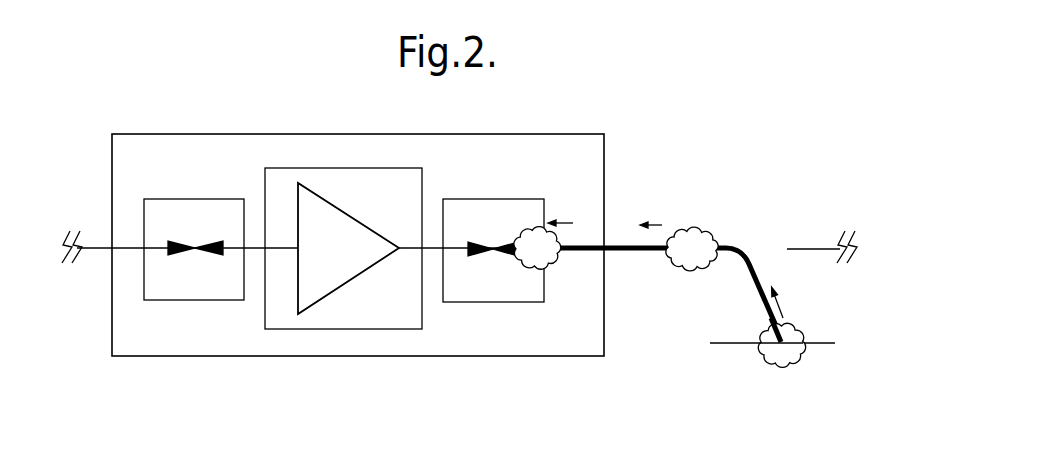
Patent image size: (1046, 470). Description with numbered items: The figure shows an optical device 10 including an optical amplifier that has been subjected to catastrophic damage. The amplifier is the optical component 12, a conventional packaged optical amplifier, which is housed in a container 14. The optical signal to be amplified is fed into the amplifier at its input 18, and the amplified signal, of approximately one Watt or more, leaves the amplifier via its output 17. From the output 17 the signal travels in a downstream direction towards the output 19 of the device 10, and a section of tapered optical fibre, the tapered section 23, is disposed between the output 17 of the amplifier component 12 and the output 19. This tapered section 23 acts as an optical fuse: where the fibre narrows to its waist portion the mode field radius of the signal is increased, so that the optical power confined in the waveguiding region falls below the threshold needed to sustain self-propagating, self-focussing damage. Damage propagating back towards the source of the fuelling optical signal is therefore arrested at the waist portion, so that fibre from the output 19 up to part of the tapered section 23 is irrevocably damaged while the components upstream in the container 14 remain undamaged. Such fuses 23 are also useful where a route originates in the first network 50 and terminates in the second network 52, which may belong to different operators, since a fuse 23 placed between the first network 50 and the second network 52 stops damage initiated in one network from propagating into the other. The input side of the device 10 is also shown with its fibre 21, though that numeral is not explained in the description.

The optical device 10 is at (448, 357).
The optical component 12 is at (348, 262).
The container 14 is at (397, 168).
The output 17 is at (423, 250).
The input 18 is at (263, 252).
The output 19 is at (612, 247).
The input optical fiber 21 is at (105, 252).
The tapered section 23 is at (518, 180).
The network 1 50 is at (697, 248).
The network 2 52 is at (548, 262).